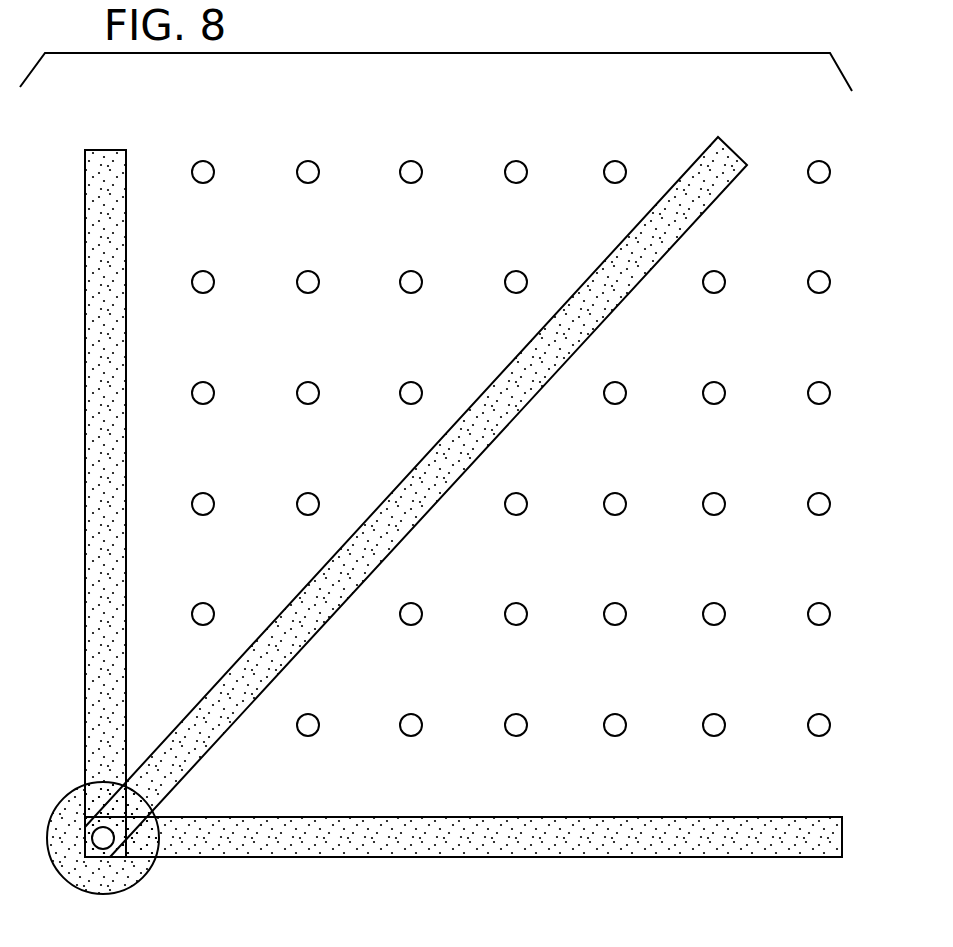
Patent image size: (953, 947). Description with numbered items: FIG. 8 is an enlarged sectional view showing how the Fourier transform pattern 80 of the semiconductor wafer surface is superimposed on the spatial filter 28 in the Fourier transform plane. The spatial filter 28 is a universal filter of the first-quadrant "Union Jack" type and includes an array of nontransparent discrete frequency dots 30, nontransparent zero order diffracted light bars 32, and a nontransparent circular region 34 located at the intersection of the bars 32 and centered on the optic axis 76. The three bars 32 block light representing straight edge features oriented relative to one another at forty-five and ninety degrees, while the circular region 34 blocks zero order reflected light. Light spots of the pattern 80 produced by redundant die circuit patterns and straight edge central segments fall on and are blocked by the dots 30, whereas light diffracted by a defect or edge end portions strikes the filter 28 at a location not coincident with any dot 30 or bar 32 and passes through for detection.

The spatial filter 28 is at (513, 239).
The discrete frequency dots 30 is at (320, 179).
The zero order diffracted light bars 32 is at (101, 150).
The circular region 34 is at (50, 852).
The optic axis 76 is at (84, 858).
The Fourier transform pattern 80 is at (469, 116).